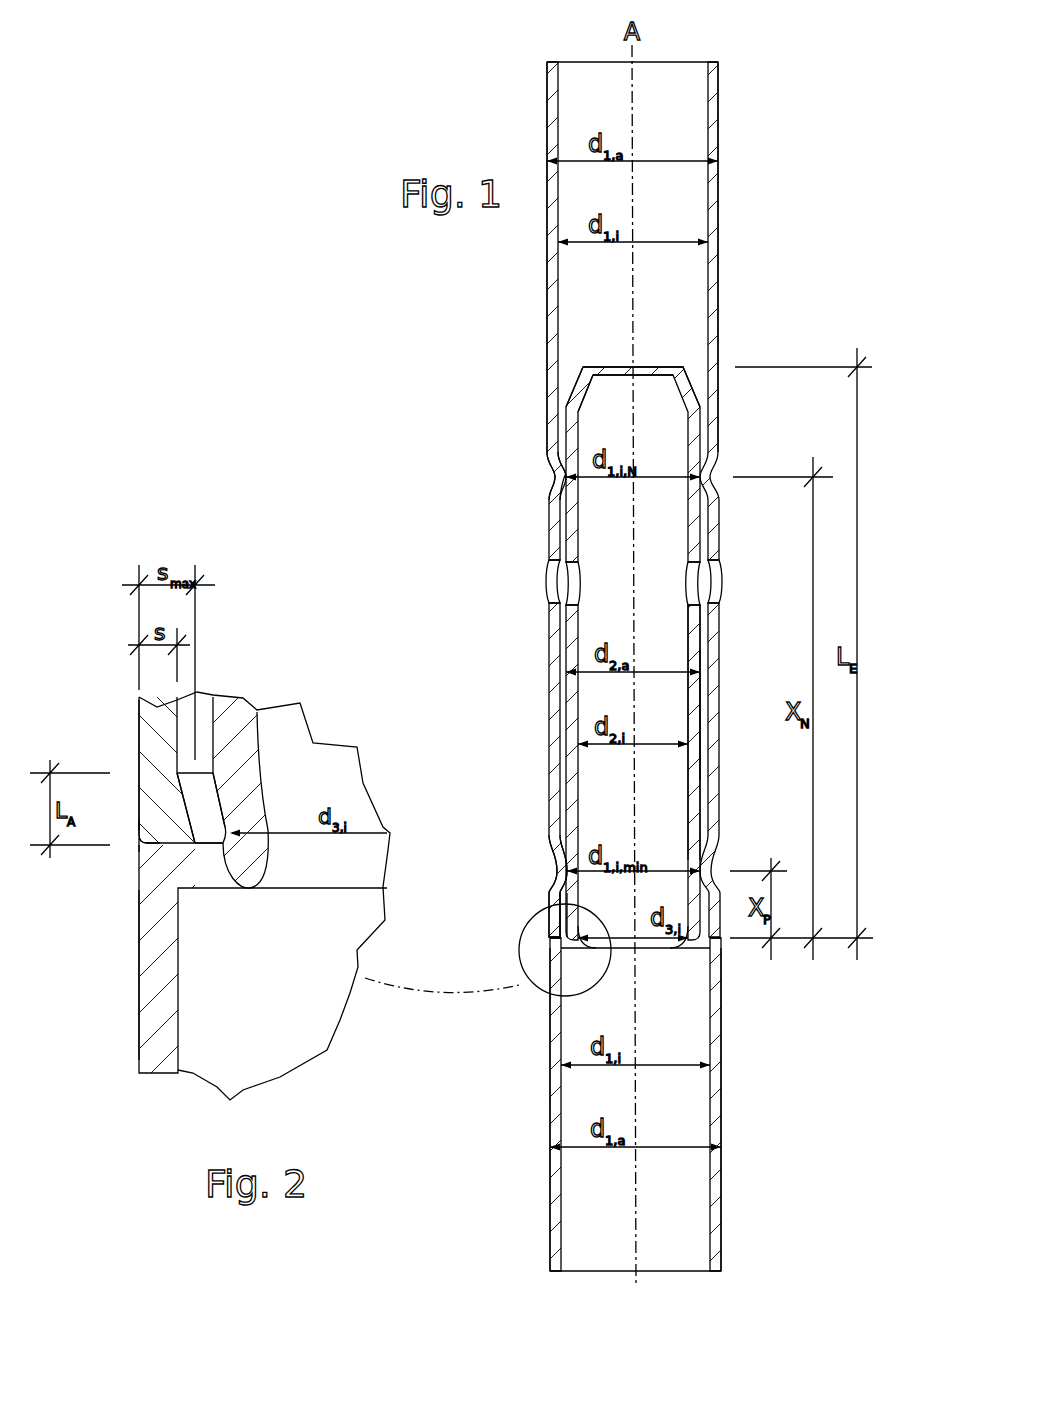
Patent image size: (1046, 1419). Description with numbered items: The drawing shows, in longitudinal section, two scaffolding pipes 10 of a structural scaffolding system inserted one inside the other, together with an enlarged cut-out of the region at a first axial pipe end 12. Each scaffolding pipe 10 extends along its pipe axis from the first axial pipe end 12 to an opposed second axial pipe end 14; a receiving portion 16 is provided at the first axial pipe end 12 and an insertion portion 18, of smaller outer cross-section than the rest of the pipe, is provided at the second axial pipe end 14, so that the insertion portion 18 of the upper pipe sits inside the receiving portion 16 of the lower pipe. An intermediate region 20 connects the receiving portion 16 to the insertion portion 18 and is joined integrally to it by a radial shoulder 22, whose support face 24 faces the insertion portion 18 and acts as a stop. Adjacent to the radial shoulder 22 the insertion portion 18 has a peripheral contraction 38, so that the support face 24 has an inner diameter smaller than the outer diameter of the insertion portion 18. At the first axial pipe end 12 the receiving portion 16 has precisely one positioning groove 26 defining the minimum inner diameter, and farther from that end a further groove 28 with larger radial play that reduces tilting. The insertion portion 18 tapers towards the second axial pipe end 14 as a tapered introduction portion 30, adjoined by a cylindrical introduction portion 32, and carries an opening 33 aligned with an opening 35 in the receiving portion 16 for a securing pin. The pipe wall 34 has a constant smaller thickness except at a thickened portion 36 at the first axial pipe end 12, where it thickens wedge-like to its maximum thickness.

In FIG. 1, the scaffolding pipe 10 is at (771, 176).
In FIG. 1, the first axial pipe end 12 is at (726, 944).
In FIG. 2, the first axial pipe end 12 is at (136, 853).
In FIG. 1, the second axial pipe end 14 is at (667, 354).
In FIG. 1, the receiving portion 16 is at (549, 707).
In FIG. 2, the receiving portion 16 is at (145, 730).
In FIG. 1, the insertion portion 18 is at (573, 766).
In FIG. 2, the insertion portion 18 is at (232, 707).
In FIG. 1, the intermediate region 20 is at (712, 97).
In FIG. 2, the intermediate region 20 is at (143, 998).
In FIG. 1, the radial shoulder 22 is at (568, 958).
In FIG. 2, the radial shoulder 22 is at (208, 816).
In FIG. 2, the support face 24 is at (197, 845).
In FIG. 1, the positioning groove 26 is at (551, 868).
In FIG. 1, the groove 28 is at (550, 478).
In FIG. 1, the tapered introduction portion 30 is at (566, 381).
In FIG. 1, the cylindrical introduction portion 32 is at (707, 626).
In FIG. 1, the opening 33 is at (571, 583).
In FIG. 1, the pipe wall 34 is at (551, 135).
In FIG. 2, the pipe wall 34 is at (150, 762).
In FIG. 1, the opening 35 is at (553, 578).
In FIG. 1, the thickened portion 36 is at (549, 925).
In FIG. 2, the thickened portion 36 is at (153, 813).
In FIG. 1, the contraction 38 is at (592, 950).
In FIG. 2, the contraction 38 is at (236, 848).